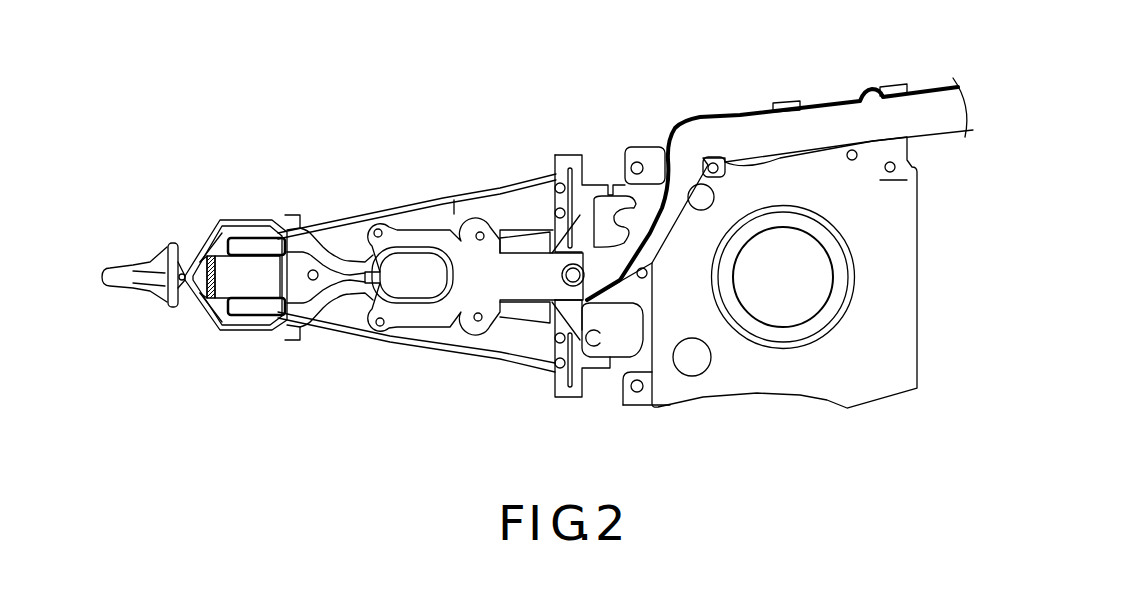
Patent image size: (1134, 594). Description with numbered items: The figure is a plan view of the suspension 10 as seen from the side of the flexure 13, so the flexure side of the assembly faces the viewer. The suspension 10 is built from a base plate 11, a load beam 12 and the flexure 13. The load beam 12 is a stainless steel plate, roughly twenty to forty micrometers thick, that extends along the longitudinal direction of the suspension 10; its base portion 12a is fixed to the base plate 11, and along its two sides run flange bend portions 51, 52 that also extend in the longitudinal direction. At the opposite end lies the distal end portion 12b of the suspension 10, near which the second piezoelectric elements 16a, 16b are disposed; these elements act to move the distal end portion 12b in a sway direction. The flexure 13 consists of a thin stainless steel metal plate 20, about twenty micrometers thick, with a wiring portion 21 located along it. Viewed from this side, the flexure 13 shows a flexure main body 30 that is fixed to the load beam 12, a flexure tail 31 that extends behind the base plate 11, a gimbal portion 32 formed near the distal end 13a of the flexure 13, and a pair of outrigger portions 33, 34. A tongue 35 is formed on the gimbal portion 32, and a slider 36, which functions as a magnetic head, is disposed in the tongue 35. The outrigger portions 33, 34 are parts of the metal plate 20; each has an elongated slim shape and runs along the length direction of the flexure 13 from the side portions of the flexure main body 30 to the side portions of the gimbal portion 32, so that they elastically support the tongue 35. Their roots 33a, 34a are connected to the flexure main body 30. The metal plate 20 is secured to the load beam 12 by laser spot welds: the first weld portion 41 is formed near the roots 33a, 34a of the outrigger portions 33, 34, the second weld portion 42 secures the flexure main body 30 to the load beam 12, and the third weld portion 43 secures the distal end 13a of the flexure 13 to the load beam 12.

The suspension 10 is at (598, 84).
The base plate 11 is at (768, 378).
The load beam 12 is at (329, 209).
The base portion 12a is at (628, 373).
The distal end portion 12b is at (118, 284).
The flexure 13 is at (435, 203).
The distal end 13a is at (167, 266).
The second piezoelectric element 16a is at (243, 243).
The second piezoelectric element 16b is at (245, 303).
The metal plate 20 is at (418, 332).
The wiring portion 21 is at (530, 282).
The flexure main body 30 is at (454, 200).
The flexure tail 31 is at (928, 107).
The gimbal portion 32 is at (222, 232).
The outrigger portion 33 is at (312, 226).
The root 33a is at (353, 225).
The outrigger portion 34 is at (318, 322).
The root 34a is at (354, 330).
The tongue 35 is at (205, 232).
The slider 36 is at (228, 292).
The first weld portion 41 is at (378, 228).
The second weld portion 42 is at (481, 231).
The third weld portion 43 is at (168, 282).
The flange bend portion 51 is at (416, 203).
The flange bend portion 52 is at (441, 352).